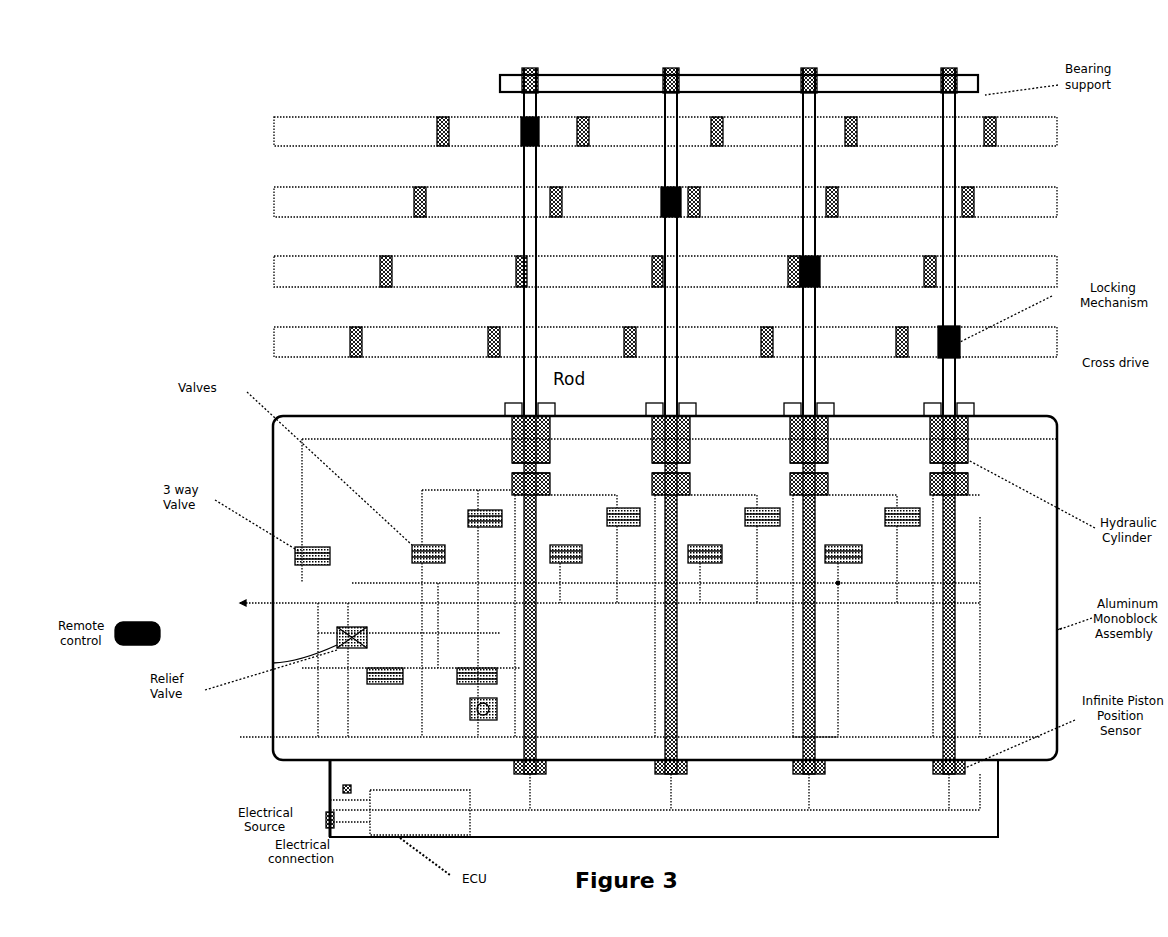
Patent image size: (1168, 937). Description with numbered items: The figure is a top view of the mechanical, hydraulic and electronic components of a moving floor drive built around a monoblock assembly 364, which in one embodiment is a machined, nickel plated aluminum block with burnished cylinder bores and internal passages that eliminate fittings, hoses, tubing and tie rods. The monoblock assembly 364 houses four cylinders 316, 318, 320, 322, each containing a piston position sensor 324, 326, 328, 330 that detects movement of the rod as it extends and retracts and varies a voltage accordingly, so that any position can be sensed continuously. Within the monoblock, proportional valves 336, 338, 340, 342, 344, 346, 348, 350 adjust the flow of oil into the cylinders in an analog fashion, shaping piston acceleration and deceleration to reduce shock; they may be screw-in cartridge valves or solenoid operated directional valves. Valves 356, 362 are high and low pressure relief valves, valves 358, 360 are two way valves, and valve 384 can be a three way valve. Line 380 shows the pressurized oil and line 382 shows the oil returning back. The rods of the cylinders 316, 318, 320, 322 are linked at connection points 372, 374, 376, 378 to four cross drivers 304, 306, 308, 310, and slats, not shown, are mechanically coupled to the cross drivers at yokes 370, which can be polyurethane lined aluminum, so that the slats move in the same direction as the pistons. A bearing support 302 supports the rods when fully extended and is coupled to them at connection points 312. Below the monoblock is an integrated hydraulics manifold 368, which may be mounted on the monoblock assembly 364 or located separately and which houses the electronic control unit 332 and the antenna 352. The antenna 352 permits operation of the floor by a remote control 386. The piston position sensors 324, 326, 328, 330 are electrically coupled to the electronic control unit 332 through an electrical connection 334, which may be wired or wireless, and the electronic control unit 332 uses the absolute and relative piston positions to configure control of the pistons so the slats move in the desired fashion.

The bearing support 302 is at (500, 82).
The cross driver 304 is at (274, 119).
The cross driver 306 is at (274, 189).
The cross driver 308 is at (274, 258).
The cross driver 310 is at (274, 329).
The connection points 312 is at (538, 73).
The cylinder 316 is at (512, 460).
The cylinder 318 is at (652, 462).
The cylinder 320 is at (790, 460).
The cylinder 322 is at (930, 460).
The piston position sensor 324 is at (540, 516).
The piston position sensor 326 is at (678, 516).
The piston position sensor 328 is at (825, 548).
The piston position sensor 330 is at (955, 563).
The electronic control unit 332 is at (418, 840).
The electrical connection 334 is at (978, 612).
The proportional valve 336 is at (412, 555).
The proportional valve 338 is at (468, 514).
The proportional valve 340 is at (550, 556).
The proportional valve 342 is at (607, 520).
The proportional valve 344 is at (688, 556).
The proportional valve 346 is at (765, 526).
The proportional valve 348 is at (845, 565).
The proportional valve 350 is at (900, 526).
The antenna 352 is at (330, 788).
The relief valve 356 is at (337, 636).
The two way valve 358 is at (367, 676).
The two way valve 360 is at (480, 676).
The relief valve 362 is at (497, 709).
The monoblock assembly 364 is at (273, 452).
The integrated hydraulics manifold 368 is at (998, 808).
The yokes 370 is at (437, 119).
The connection point 372 is at (527, 118).
The connection point 374 is at (668, 190).
The connection point 376 is at (805, 258).
The connection point 378 is at (960, 342).
The line 380 is at (302, 484).
The line 382 is at (273, 663).
The three way valve 384 is at (295, 556).
The remote control 386 is at (160, 628).